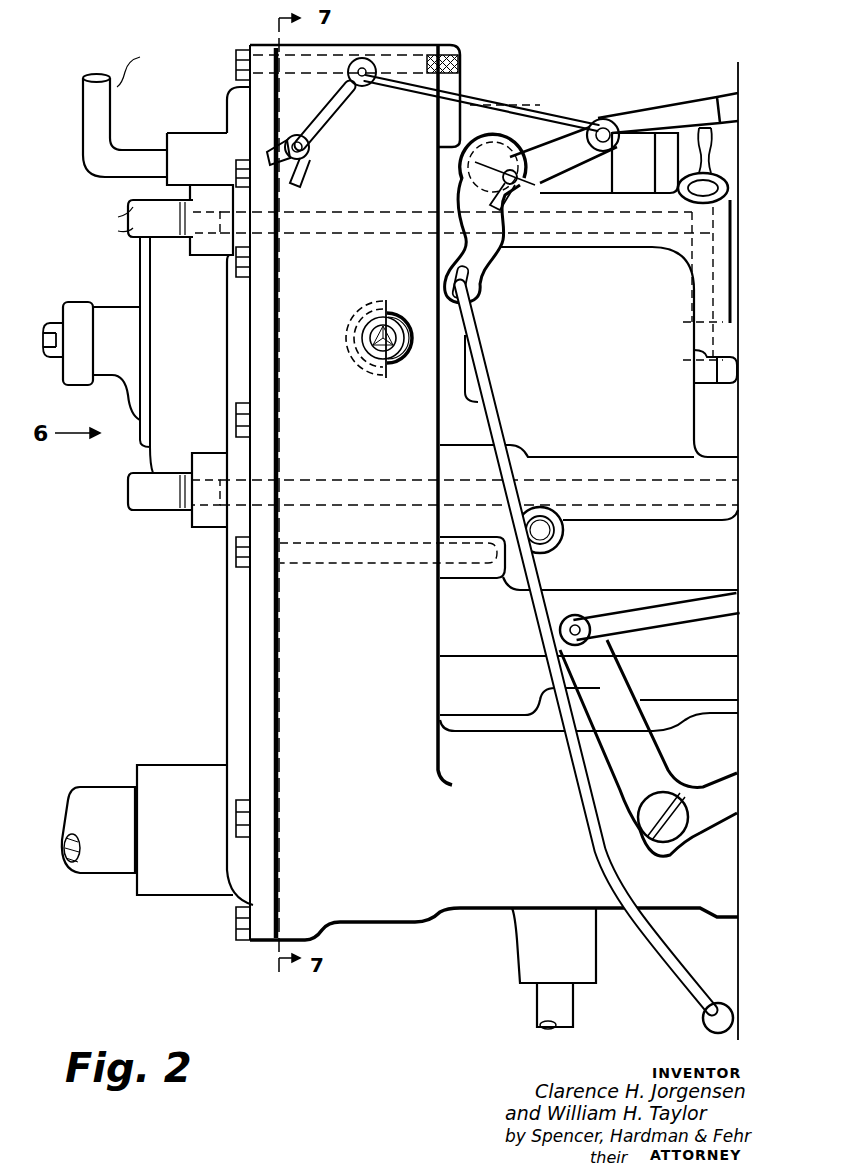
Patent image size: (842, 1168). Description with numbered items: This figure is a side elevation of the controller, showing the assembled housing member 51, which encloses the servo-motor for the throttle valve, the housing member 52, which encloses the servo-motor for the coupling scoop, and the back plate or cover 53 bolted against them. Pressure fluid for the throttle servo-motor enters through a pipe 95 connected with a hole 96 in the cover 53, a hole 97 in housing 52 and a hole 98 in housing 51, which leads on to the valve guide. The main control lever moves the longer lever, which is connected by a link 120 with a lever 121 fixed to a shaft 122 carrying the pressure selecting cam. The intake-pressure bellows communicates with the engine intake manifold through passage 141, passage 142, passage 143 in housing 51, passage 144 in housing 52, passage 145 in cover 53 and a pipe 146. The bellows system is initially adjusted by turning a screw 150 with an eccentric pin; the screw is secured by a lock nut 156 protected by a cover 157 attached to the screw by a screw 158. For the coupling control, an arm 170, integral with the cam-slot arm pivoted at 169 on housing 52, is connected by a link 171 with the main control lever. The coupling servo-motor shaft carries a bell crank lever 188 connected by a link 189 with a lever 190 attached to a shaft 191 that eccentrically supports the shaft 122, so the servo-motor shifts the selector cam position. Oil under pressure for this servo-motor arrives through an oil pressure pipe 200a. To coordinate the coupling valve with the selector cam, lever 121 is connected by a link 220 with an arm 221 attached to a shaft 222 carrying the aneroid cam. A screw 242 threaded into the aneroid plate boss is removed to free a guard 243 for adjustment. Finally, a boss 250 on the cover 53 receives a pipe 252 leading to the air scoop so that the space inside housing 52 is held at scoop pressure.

The housing member 51 is at (462, 53).
The housing member 52 is at (420, 923).
The back plate or cover 53 is at (227, 693).
The pipe 95 is at (128, 478).
The hole 96 is at (233, 510).
The hole 97 is at (352, 503).
The hole 98 is at (617, 507).
The link 120 is at (641, 137).
The lever 121 is at (562, 155).
The shaft 122 is at (518, 202).
The passage 141 is at (740, 341).
The passage 142 is at (713, 245).
The passage 143 is at (597, 233).
The passage 144 is at (347, 230).
The passage 145 is at (230, 233).
The pipe 146 is at (133, 205).
The screw 150 is at (397, 370).
The lock nut 156 is at (408, 360).
The cover 157 is at (353, 363).
The screw 158 is at (412, 332).
The pivot 169 is at (667, 793).
The arm 170 is at (580, 613).
The link 171 is at (686, 613).
The bell crank lever 188 is at (703, 1013).
The link 189 is at (490, 373).
The lever 190 is at (470, 235).
The shaft 191 is at (462, 162).
The oil pressure pipe 200a is at (537, 1007).
The link 220 is at (511, 112).
The arm 221 is at (335, 107).
The shaft 222 is at (300, 147).
The screw 242 is at (50, 333).
The guard 243 is at (76, 301).
The boss 250 is at (194, 135).
The pipe 252 is at (83, 108).